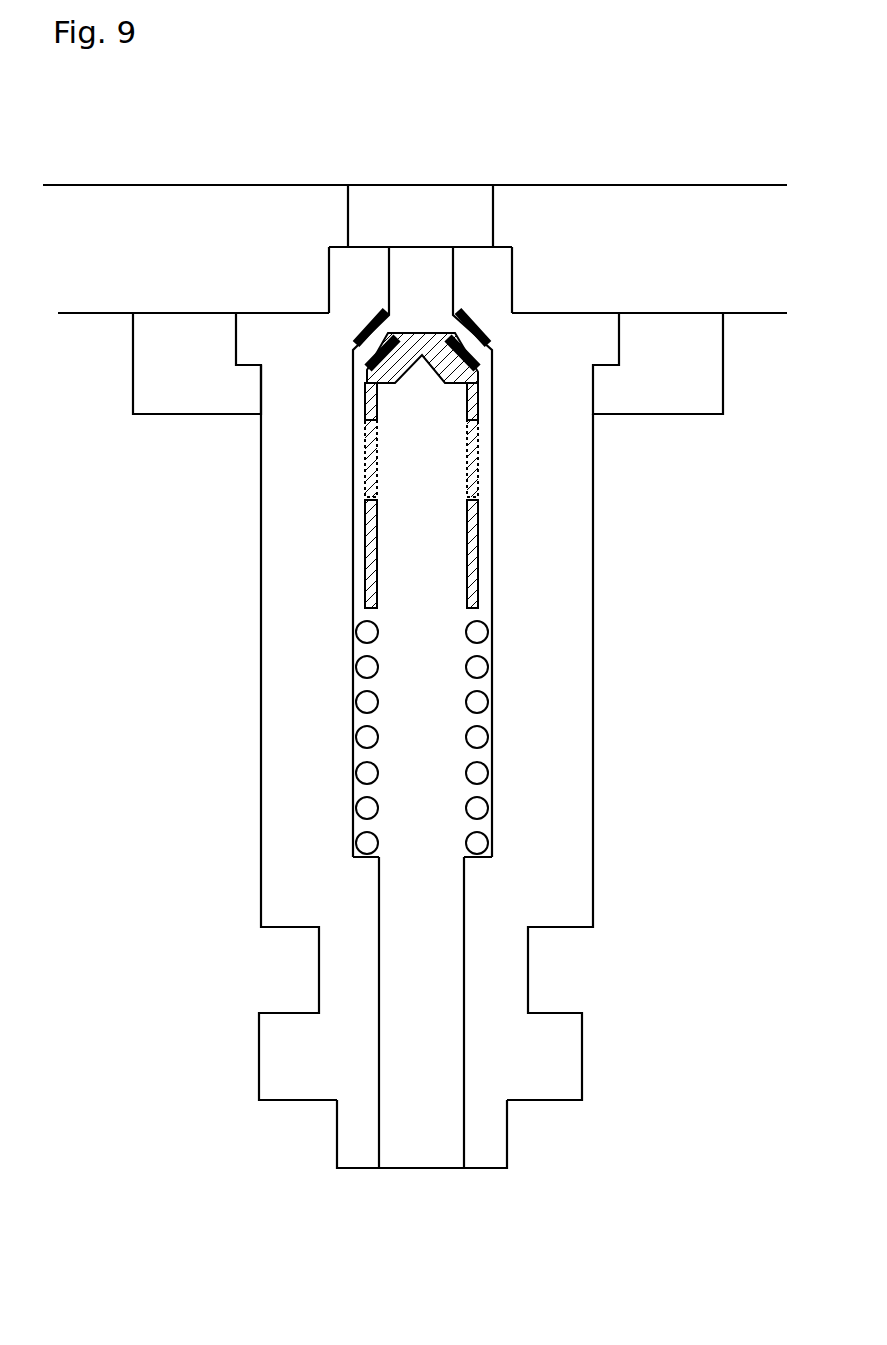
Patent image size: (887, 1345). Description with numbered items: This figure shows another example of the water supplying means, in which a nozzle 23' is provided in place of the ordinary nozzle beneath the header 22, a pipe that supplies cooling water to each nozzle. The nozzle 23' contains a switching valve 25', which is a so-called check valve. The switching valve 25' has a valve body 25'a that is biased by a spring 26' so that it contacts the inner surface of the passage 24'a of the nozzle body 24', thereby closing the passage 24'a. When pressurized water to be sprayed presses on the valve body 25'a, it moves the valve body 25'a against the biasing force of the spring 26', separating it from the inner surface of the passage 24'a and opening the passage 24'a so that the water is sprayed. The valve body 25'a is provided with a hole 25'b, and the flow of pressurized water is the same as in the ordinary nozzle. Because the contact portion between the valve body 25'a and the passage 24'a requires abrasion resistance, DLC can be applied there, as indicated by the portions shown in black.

The header 22 is at (82, 335).
The nozzle 23' is at (347, 1046).
The nozzle body 24' is at (388, 732).
The passage 24'a is at (471, 1077).
The switching valve 25' is at (557, 507).
The valve body 25'a is at (553, 509).
The hole 25'b is at (543, 500).
The spring 26' is at (517, 737).